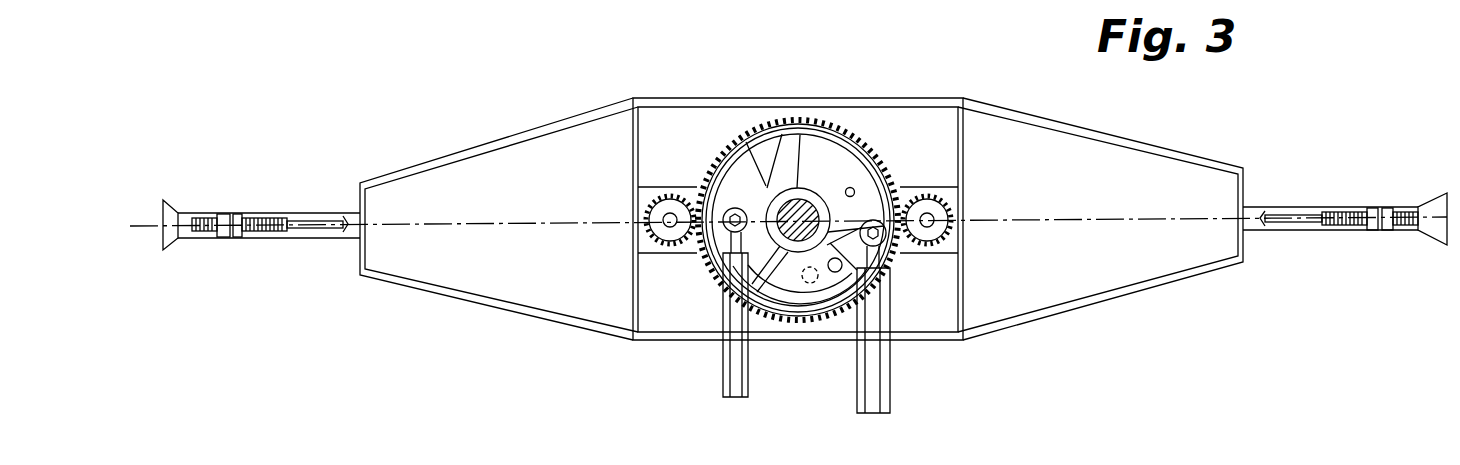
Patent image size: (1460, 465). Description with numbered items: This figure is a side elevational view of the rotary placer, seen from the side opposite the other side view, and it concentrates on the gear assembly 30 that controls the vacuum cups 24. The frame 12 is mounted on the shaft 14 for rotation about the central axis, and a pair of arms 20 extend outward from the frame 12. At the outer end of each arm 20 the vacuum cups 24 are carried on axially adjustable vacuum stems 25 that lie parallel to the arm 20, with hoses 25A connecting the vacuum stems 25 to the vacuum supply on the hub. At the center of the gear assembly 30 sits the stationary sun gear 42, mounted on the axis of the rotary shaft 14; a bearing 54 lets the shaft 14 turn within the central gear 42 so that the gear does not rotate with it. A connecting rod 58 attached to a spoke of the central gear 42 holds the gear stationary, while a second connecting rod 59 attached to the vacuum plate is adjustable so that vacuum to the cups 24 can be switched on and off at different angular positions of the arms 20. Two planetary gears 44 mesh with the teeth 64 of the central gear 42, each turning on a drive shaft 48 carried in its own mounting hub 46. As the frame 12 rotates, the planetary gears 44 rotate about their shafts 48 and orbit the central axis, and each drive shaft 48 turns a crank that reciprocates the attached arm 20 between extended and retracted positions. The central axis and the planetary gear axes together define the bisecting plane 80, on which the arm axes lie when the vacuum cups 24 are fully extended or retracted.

The frame 12 is at (1069, 286).
The shaft 14 is at (805, 208).
The arm 20 is at (326, 240).
The vacuum cups 24 is at (168, 250).
The vacuum stems 25 is at (263, 232).
The hoses 25A is at (299, 216).
The gear assembly 30 is at (900, 258).
The central stationary sun gear 42 is at (703, 173).
The planetary gears 44 is at (665, 196).
The mounting hub 46 is at (665, 246).
The drive shaft 48 is at (655, 232).
The bearing 54 is at (797, 268).
The connecting rod 58 is at (887, 314).
The connecting rod 59 is at (732, 373).
The teeth 64 is at (800, 124).
The bisecting plane 80 is at (468, 224).